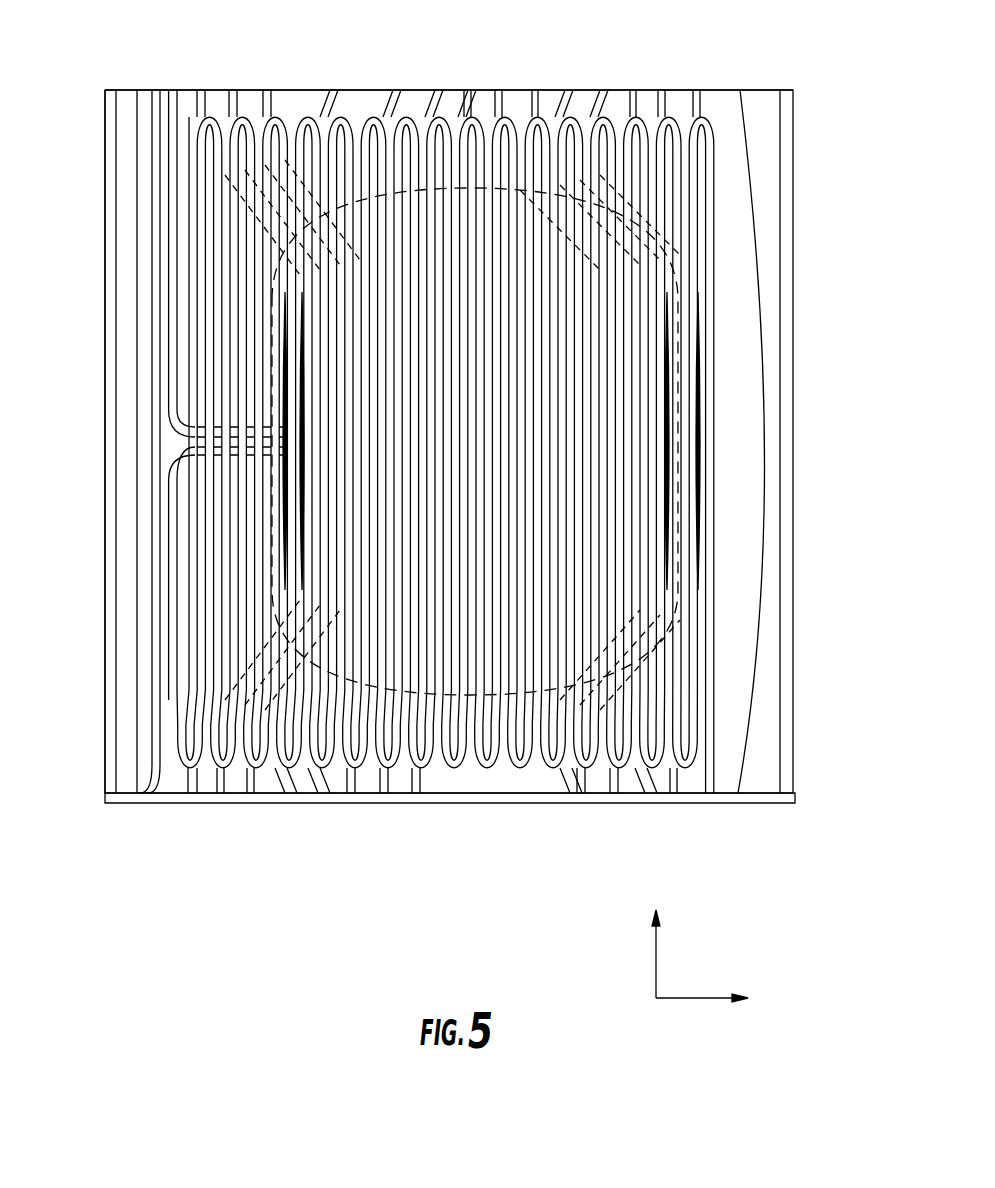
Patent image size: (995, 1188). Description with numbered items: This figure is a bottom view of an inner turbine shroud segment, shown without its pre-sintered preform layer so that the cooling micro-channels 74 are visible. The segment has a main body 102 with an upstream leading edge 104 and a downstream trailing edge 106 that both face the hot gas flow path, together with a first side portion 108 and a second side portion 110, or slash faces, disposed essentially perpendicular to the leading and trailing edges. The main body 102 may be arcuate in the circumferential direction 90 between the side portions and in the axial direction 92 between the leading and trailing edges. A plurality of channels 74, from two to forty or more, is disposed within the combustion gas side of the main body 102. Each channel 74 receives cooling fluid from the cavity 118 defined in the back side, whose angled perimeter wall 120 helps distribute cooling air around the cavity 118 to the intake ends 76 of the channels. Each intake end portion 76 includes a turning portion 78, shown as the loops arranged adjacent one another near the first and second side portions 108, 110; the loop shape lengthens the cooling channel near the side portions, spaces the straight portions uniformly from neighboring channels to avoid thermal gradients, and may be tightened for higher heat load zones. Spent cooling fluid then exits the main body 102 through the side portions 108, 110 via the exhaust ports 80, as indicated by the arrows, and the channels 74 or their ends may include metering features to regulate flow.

The micro-channels 74 is at (172, 392).
The intake end portion 76 is at (640, 238).
The turning portion 78 is at (611, 117).
The exhaust ports 80 is at (695, 90).
The circumferential direction 90 is at (652, 953).
The axial direction 92 is at (716, 995).
The main body 102 is at (810, 805).
The leading edge 104 is at (105, 528).
The trailing edge 106 is at (795, 470).
The first side portion 108 is at (622, 805).
The second side portion 110 is at (489, 90).
The cavity 118 is at (590, 452).
The angled perimeter wall 120 is at (290, 330).